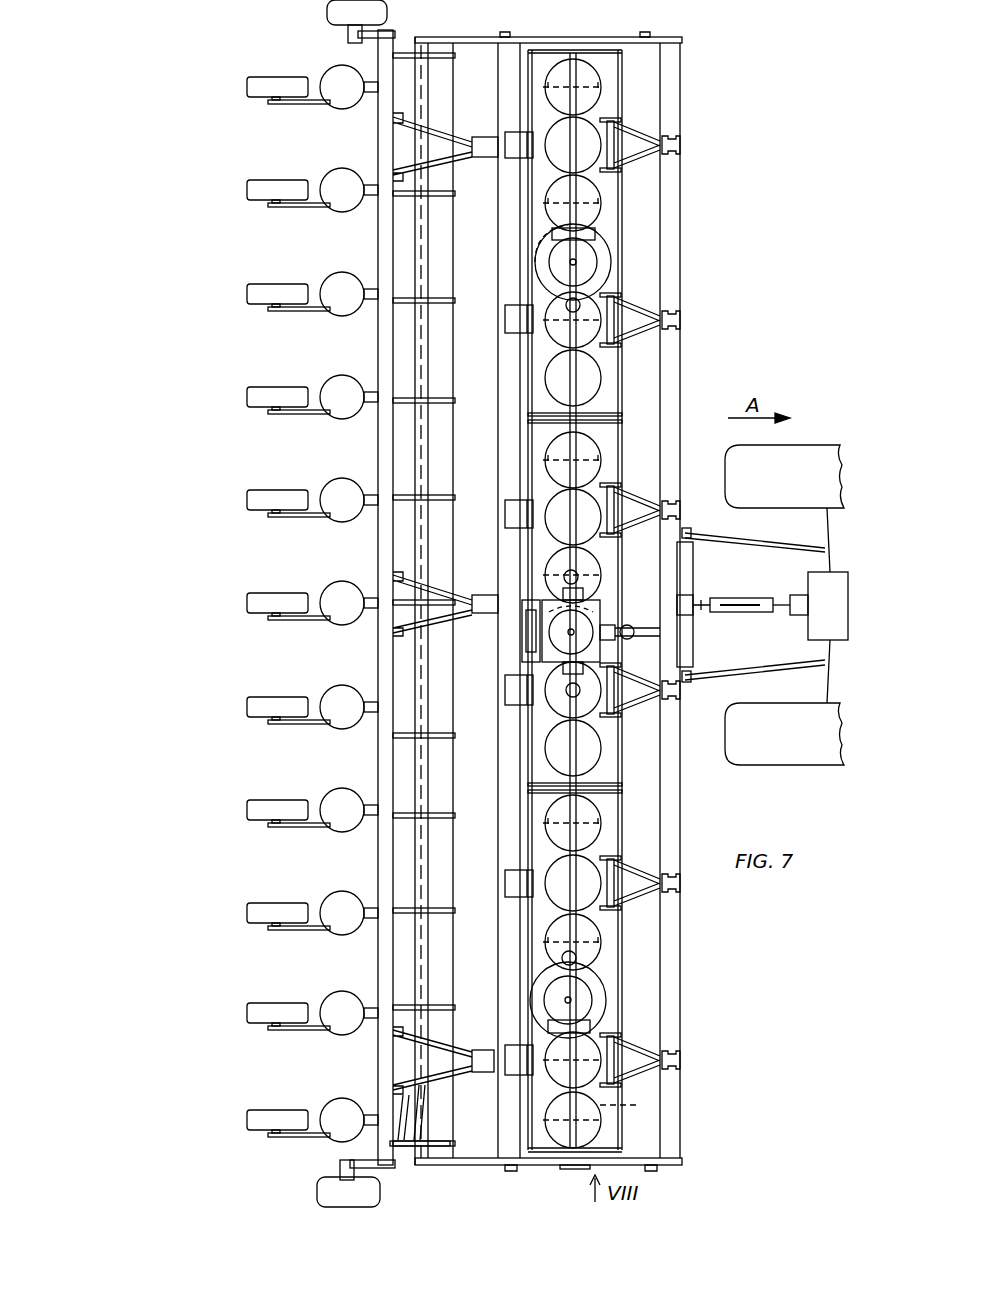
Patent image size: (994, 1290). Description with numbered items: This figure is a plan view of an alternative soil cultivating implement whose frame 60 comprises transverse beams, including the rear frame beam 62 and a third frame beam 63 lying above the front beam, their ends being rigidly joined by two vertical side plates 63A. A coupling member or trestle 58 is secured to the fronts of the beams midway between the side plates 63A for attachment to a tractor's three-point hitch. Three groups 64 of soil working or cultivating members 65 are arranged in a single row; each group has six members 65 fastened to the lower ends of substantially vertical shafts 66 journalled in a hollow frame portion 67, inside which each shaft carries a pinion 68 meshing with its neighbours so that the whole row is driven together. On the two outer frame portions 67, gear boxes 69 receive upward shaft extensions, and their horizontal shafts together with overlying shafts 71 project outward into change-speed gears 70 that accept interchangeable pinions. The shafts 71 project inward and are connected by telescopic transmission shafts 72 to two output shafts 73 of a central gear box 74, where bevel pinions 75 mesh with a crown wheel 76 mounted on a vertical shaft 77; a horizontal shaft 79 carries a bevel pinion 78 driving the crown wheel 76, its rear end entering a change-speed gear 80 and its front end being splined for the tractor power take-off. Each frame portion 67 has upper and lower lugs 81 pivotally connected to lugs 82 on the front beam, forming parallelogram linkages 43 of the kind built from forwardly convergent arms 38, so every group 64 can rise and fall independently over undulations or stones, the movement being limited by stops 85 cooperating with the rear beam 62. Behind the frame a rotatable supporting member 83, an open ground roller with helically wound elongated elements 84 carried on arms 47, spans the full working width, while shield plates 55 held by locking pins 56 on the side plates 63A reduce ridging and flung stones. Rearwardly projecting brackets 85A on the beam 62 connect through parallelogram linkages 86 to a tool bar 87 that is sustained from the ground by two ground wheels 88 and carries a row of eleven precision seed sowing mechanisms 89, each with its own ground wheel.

The forwardly convergent arms 38 is at (645, 163).
The parallelogram linkages 43 is at (655, 341).
The arms 47 is at (455, 25).
The shield plates 55 is at (578, 1170).
The locking pins 56 is at (516, 37).
The coupling member or trestle 58 is at (693, 560).
The frame 60 is at (684, 268).
The frame beam 62 is at (538, 239).
The third frame beam 63 is at (681, 112).
The side plates 63A is at (665, 38).
The groups of soil working or cultivating members 64 is at (533, 372).
The soil working or cultivating members 65 is at (605, 82).
The shafts 66 is at (574, 38).
The hollow frame portion 67 is at (533, 205).
The pinions 68 is at (620, 38).
The gear boxes 69 is at (597, 262).
The change-speed gears 70 is at (595, 234).
The shafts 71 is at (566, 302).
The telescopic transmission shafts 72 is at (575, 409).
The output shafts 73 is at (698, 657).
The gear box 74 is at (472, 728).
The bevel pinions 75 is at (600, 600).
The bevel pinion or crown wheel 76 is at (603, 618).
The shaft 77 is at (522, 665).
The bevel pinion 78 is at (528, 645).
The shaft 79 is at (605, 628).
The change-speed gear 80 is at (540, 632).
The lugs 81 is at (630, 602).
The lugs 82 is at (682, 148).
The rotatable supporting member 83 is at (462, 374).
The elongated elements 84 is at (420, 1120).
The stops 85 is at (505, 310).
The brackets 85A is at (496, 137).
The parallelogram linkages 86 is at (482, 158).
The tool bar 87 is at (376, 44).
The ground wheels 88 is at (327, 10).
The precision seed sowing mechanisms 89 is at (270, 198).